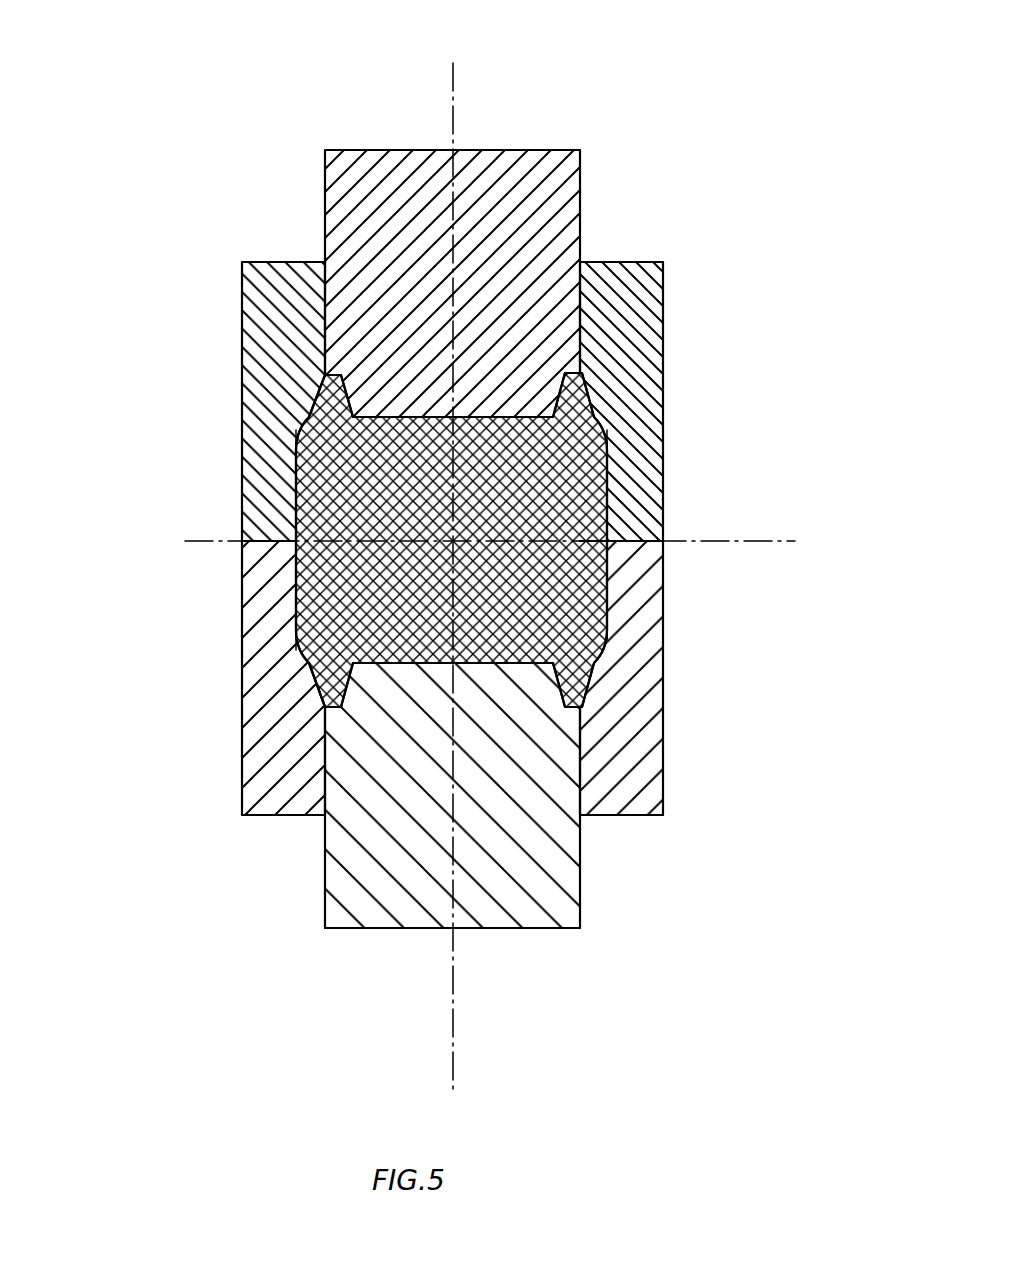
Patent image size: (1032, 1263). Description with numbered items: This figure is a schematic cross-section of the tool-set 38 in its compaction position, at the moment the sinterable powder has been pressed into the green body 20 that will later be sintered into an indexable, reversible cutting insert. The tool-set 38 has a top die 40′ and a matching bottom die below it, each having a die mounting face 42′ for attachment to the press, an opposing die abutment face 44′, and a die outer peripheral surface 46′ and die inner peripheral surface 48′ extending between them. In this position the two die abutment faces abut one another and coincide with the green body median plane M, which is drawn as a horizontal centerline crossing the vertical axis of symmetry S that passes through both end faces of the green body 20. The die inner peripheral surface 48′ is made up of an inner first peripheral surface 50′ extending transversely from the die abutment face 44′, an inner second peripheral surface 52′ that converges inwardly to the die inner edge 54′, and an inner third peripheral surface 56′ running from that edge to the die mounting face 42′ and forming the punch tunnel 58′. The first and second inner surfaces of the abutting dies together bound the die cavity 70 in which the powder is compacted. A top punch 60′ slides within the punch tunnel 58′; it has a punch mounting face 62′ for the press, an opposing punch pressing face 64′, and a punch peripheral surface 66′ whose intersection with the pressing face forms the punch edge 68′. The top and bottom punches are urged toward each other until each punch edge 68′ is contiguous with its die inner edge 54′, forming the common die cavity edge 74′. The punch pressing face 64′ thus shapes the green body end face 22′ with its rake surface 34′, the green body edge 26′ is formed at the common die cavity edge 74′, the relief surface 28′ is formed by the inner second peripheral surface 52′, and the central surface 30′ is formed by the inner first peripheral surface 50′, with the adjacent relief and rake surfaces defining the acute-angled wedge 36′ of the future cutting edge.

The green body 20 is at (545, 495).
The top green body end face 22′ is at (430, 415).
The top green body edge 26′ is at (323, 376).
The top relief surface 28′ is at (287, 412).
The top central surface 30′ is at (296, 503).
The top rake surface 34′ is at (385, 412).
The top wedge 36′ is at (300, 435).
The tool-set 38 is at (727, 260).
The top die 40′ is at (675, 343).
The top die mounting face 42′ is at (655, 250).
The top die abutment face 44′ is at (296, 560).
The top die outer peripheral surface 46′ is at (663, 358).
The top die inner peripheral surface 48′ is at (588, 513).
The top inner first peripheral surface 50′ is at (590, 448).
The top inner second peripheral surface 52′ is at (607, 440).
The top die inner edge 54′ is at (590, 410).
The top inner third peripheral surface 56′ is at (582, 162).
The top punch tunnel 58′ is at (580, 307).
The top punch 60′ is at (596, 157).
The top punch mounting face 62′ is at (503, 150).
The top punch pressing face 64′ is at (285, 496).
The top punch peripheral surface 66′ is at (325, 183).
The top punch edge 68′ is at (323, 378).
The die cavity 70 is at (285, 570).
The top common die cavity edge 74′ is at (323, 380).
The axis of symmetry S is at (457, 80).
The median plane M is at (775, 541).